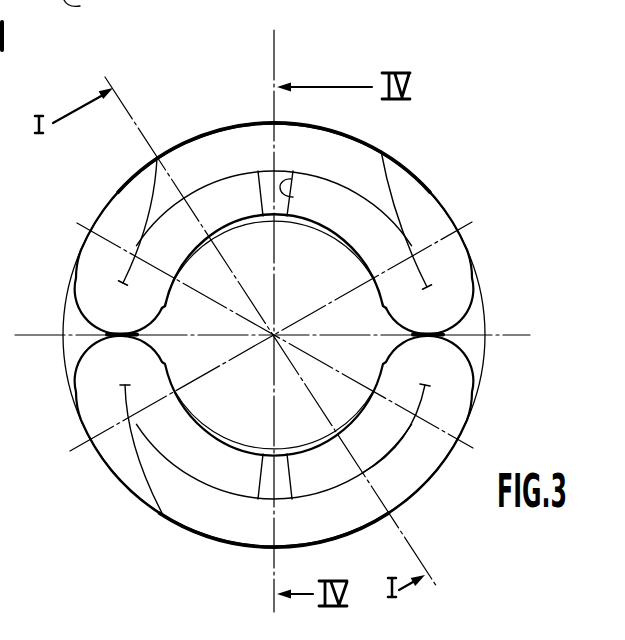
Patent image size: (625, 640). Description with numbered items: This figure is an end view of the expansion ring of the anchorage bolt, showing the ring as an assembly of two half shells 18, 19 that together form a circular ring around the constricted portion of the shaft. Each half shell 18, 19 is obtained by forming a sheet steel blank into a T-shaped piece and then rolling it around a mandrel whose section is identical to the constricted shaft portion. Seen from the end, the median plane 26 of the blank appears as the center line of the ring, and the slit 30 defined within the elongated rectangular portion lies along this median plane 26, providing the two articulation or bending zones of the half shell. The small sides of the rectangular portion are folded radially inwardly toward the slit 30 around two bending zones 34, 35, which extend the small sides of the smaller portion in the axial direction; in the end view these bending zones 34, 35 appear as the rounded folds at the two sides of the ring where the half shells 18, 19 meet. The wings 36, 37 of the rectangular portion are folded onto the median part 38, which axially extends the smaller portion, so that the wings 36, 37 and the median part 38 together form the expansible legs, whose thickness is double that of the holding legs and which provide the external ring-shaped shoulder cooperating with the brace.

The half shell 18 is at (278, 232).
The half shell 19 is at (354, 552).
The median plane 26 is at (278, 62).
The slit 30 is at (293, 197).
The bending zone 34 is at (437, 312).
The bending zone 35 is at (100, 300).
The wing 36 is at (147, 198).
The wing 37 is at (417, 208).
The median part 38 is at (353, 248).